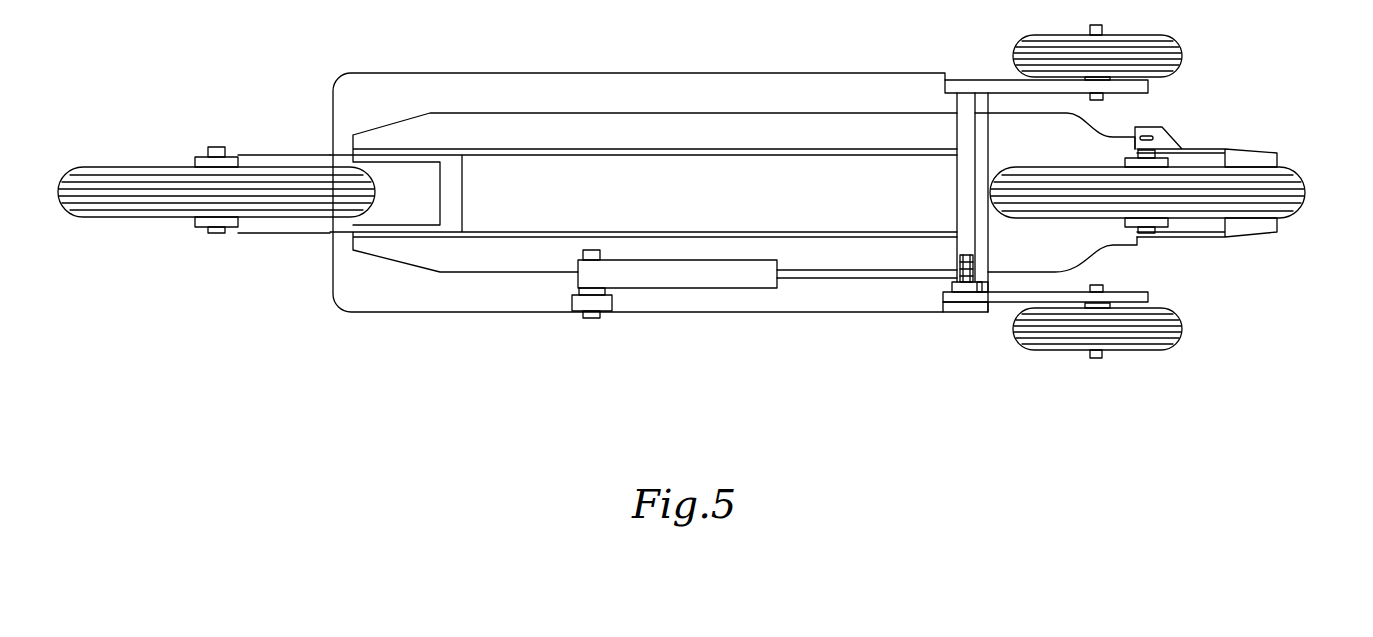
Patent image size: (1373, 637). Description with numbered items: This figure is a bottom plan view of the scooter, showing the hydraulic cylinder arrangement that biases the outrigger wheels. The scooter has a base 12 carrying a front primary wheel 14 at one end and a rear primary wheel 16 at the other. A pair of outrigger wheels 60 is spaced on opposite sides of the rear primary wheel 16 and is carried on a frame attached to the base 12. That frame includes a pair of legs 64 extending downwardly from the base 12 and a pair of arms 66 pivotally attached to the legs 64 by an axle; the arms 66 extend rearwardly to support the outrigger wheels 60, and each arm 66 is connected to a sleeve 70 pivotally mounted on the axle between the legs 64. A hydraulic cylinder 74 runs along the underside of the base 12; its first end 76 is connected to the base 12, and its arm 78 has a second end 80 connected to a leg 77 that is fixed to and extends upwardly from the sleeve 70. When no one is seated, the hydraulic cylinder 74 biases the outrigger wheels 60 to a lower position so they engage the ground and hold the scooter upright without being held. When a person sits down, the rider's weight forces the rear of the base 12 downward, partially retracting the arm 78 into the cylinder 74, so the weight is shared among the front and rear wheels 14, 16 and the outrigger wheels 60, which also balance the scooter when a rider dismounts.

The base 12 is at (352, 86).
The front primary wheel 14 is at (113, 170).
The rear primary wheel 16 is at (1297, 185).
The outrigger wheels 60 is at (1165, 45).
The legs 64 is at (963, 312).
The arms 66 is at (1005, 88).
The sleeve 70 is at (958, 103).
The hydraulic cylinder 74 is at (693, 289).
The first end 76 is at (585, 283).
The leg 77 is at (988, 290).
The arm 78 is at (795, 280).
The second end 80 is at (938, 283).